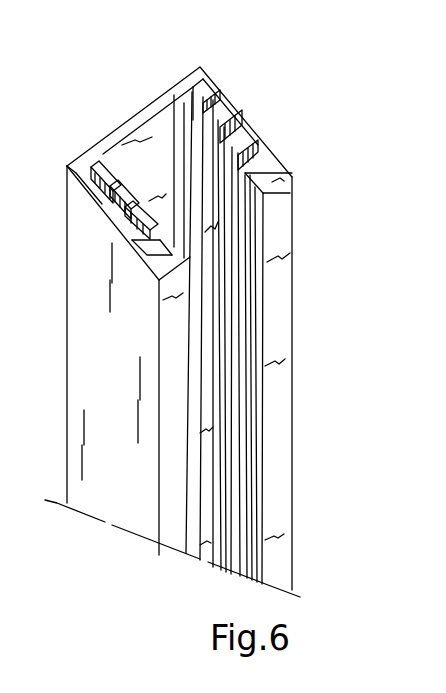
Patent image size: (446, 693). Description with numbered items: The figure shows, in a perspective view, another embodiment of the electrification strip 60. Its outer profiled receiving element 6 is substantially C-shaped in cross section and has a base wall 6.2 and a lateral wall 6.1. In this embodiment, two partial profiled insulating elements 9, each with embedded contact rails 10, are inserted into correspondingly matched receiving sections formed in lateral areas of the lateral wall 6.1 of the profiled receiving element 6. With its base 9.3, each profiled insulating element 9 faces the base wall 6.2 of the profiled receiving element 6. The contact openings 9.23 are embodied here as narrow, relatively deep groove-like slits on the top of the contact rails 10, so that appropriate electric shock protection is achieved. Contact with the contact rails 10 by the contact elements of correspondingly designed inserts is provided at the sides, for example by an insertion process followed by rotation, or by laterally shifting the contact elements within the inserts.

The profiled receiving element 6 is at (293, 273).
The lateral wall 6.1 is at (96, 202).
The base wall 6.2 is at (127, 122).
The profiled insulating element 9 is at (223, 110).
The contact openings 9.23 is at (113, 148).
The base 9.3 is at (212, 96).
The contact rails 10 is at (254, 131).
The electrification strip 60 is at (300, 161).